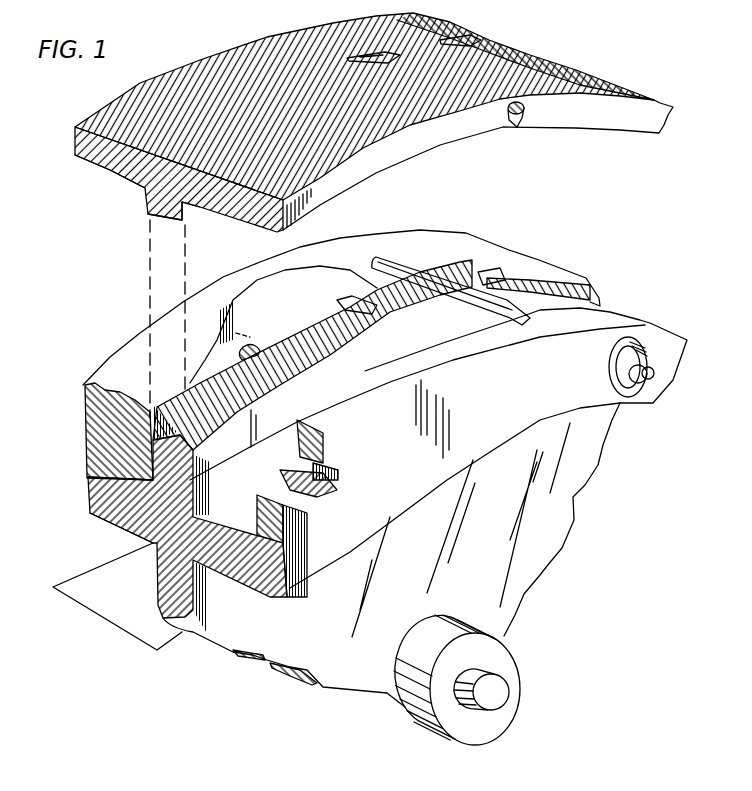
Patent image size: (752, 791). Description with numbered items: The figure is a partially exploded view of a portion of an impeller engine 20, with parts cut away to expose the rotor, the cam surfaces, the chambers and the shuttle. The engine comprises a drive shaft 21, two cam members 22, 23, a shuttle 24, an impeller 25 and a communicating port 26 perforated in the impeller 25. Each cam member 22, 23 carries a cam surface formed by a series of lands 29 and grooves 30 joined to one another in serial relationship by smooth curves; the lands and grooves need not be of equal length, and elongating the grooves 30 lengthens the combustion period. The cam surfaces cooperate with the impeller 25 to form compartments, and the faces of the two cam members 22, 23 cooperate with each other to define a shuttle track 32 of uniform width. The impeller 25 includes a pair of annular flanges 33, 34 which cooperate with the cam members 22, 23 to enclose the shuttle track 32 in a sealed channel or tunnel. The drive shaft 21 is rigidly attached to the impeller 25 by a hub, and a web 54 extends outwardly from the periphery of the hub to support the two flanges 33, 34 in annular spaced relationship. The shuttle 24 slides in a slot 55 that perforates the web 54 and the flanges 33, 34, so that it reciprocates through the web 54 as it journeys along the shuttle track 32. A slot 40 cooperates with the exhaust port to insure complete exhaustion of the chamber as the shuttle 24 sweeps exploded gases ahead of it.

The impeller engine 20 is at (507, 72).
The drive shaft 21 is at (494, 690).
The cam member 22 is at (133, 352).
The cam member 23 is at (455, 321).
The shuttle 24 is at (408, 265).
The impeller 25 is at (242, 653).
The communicating port 26 is at (380, 50).
The land 29 is at (176, 396).
The groove 30 is at (272, 280).
The shuttle track 32 is at (100, 616).
The annular flange 33 is at (100, 156).
The annular flange 34 is at (107, 500).
The slot 40 is at (313, 473).
The web 54 is at (190, 208).
The slot 55 is at (524, 112).